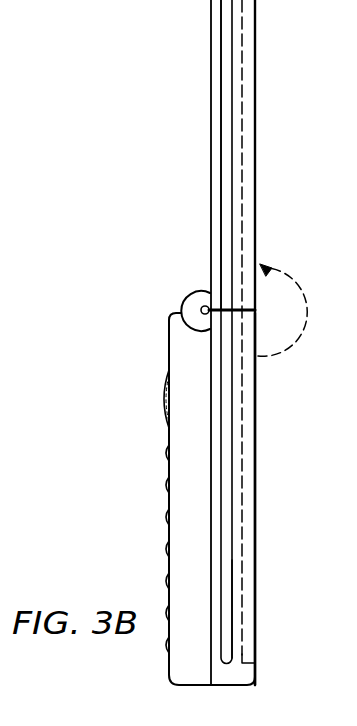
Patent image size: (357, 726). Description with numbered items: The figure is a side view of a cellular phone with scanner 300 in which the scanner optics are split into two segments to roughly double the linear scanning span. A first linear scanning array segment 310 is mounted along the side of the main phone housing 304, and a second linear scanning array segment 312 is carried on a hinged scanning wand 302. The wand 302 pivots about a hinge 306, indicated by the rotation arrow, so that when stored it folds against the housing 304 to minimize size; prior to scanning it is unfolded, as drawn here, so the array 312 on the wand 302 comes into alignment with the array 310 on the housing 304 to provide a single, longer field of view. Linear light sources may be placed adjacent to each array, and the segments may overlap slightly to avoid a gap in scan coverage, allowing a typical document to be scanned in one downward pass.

The electronic device body 300 is at (169, 350).
The hinged scanning wand 302 is at (255, 140).
The second housing portion 304 is at (255, 424).
The hinge 306 is at (201, 307).
The linear scanning array segment 310 is at (221, 72).
The linear scanning array segment 312 is at (232, 565).